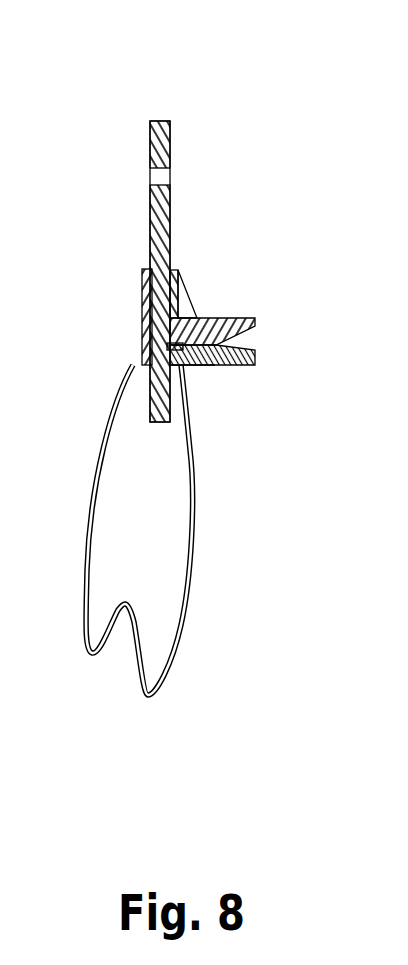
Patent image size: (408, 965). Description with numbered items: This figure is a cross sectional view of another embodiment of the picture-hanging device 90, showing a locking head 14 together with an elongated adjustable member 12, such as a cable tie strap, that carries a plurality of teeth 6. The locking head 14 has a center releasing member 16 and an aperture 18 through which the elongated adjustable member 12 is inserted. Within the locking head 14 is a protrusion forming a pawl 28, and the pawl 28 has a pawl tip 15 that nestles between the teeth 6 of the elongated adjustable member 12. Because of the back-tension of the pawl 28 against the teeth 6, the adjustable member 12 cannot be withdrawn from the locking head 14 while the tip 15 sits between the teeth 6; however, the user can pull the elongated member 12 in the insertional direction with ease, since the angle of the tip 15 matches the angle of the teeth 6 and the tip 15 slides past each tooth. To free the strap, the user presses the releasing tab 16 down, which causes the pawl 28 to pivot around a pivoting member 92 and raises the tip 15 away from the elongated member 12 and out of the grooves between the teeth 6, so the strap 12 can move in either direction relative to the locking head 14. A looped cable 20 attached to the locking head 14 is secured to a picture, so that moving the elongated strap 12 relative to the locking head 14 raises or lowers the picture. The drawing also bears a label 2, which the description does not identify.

The picture-hanging device 90 is at (215, 113).
The panel 2 is at (150, 175).
The elongated adjustable member 12 is at (170, 215).
The teeth 6 is at (178, 278).
The aperture 18 is at (191, 298).
The center releasing member 16 is at (227, 317).
The locking head 14 is at (142, 318).
The pivoting member 92 is at (256, 366).
The pawl 28 is at (190, 365).
The pawl tip 15 is at (190, 367).
The looped cable 20 is at (187, 627).